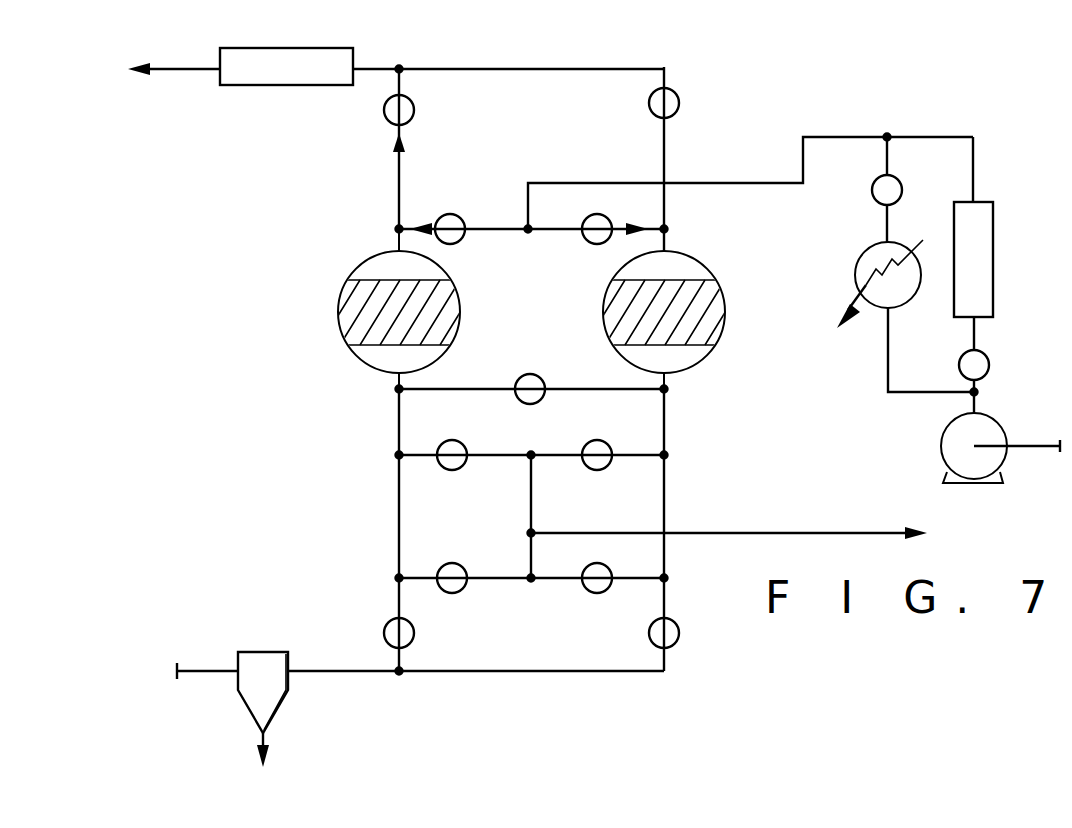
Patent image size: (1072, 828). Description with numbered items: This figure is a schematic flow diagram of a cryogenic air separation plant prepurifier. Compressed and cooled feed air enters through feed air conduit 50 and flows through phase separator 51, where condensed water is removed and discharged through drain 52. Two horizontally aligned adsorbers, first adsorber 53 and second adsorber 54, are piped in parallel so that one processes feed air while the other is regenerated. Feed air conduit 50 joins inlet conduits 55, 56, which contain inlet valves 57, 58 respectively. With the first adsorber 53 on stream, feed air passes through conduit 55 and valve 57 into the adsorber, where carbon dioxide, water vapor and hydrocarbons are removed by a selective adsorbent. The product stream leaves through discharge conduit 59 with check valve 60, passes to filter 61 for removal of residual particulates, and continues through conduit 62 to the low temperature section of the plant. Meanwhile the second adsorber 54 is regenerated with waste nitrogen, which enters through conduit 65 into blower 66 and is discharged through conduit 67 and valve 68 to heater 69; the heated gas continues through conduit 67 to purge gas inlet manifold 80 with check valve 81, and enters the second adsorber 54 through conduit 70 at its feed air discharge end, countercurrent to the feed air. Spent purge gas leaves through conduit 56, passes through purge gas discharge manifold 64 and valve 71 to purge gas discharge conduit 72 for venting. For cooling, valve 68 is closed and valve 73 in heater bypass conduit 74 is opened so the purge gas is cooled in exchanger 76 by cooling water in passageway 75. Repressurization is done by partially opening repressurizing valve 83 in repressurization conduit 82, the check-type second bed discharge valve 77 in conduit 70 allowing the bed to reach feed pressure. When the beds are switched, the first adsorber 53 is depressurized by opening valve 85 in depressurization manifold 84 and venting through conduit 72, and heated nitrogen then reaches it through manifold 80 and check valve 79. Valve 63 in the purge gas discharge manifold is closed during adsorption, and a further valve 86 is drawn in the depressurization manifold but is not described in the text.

The feed air conduit 50 is at (210, 676).
The phase separator 51 is at (263, 652).
The drain 52 is at (265, 734).
The first adsorber 53 is at (446, 282).
The second adsorber 54 is at (724, 282).
The inlet conduit 55 is at (394, 437).
The inlet conduit 56 is at (669, 432).
The inlet valve 57 is at (416, 633).
The inlet valve 58 is at (681, 631).
The discharge conduit 59 is at (397, 186).
The check valve 60 is at (385, 112).
The filter 61 is at (320, 48).
The conduit 62 is at (180, 68).
The valve 63 is at (445, 440).
The purge gas discharge manifold 64 is at (492, 452).
The conduit 65 is at (1019, 444).
The blower 66 is at (940, 448).
The conduit 67 is at (831, 136).
The valve 68 is at (990, 370).
The heater 69 is at (994, 279).
The conduit 70 is at (670, 240).
The valve 71 is at (597, 440).
The purge gas discharge conduit 72 is at (790, 530).
The valve 73 is at (922, 186).
The heater bypass conduit 74 is at (885, 373).
The passageway 75 is at (860, 298).
The exchanger 76 is at (857, 268).
The second bed discharge valve 77 is at (679, 104).
The check valve 79 is at (444, 214).
The purge gas inlet manifold 80 is at (562, 232).
The check valve 81 is at (598, 214).
The repressurization conduit 82 is at (482, 386).
The repressurizing valve 83 is at (544, 378).
The depressurization manifold 84 is at (560, 577).
The valve 85 is at (445, 563).
The valve 86 is at (601, 565).